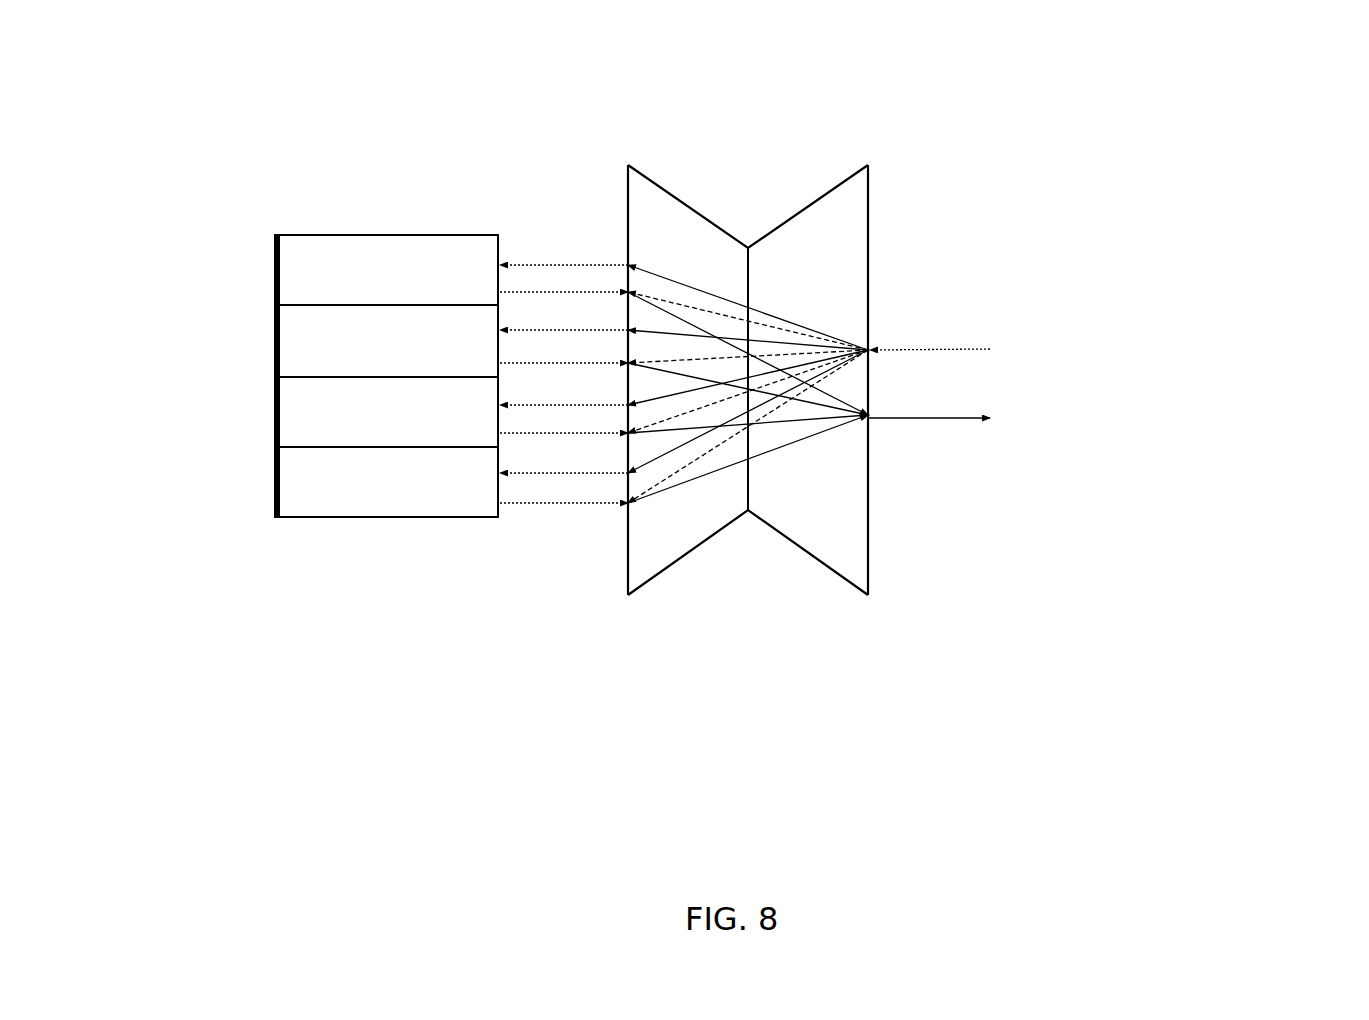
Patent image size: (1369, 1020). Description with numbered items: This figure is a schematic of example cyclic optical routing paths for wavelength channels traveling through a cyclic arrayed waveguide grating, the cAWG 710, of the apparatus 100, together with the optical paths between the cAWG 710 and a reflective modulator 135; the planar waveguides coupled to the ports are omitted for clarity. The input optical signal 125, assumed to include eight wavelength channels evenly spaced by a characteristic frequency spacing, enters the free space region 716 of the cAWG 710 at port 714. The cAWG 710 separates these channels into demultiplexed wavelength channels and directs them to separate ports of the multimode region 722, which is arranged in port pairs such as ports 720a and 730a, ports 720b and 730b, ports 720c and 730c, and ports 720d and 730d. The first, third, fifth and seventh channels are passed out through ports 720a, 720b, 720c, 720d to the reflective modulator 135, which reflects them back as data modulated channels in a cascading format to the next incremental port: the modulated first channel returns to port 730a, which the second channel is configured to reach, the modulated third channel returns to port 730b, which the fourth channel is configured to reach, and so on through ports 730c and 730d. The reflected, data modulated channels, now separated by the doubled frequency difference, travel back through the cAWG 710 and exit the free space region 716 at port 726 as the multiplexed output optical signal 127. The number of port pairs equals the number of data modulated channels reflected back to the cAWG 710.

The apparatus 100 is at (740, 328).
The reflective modulator 135 is at (240, 250).
The cAWG 710 is at (703, 165).
The multimode region 722 is at (627, 162).
The free space region 716 is at (870, 163).
The port 714 is at (870, 349).
The port 726 is at (871, 420).
The port 720a is at (626, 262).
The port 720b is at (626, 329).
The port 720c is at (626, 404).
The port 720d is at (626, 472).
The port 730a is at (626, 290).
The port 730b is at (626, 362).
The port 730c is at (626, 432).
The port 730d is at (626, 502).
The input optical signal 125 is at (1076, 316).
The output optical signal 127 is at (1079, 452).